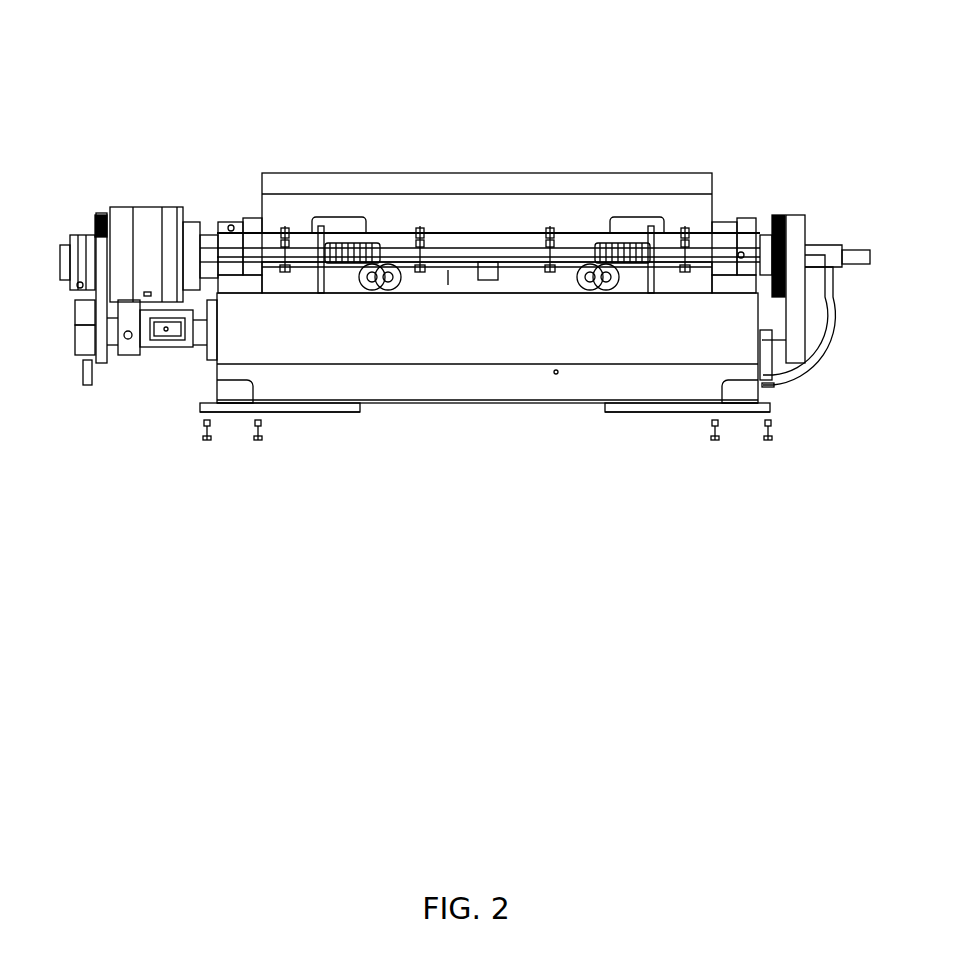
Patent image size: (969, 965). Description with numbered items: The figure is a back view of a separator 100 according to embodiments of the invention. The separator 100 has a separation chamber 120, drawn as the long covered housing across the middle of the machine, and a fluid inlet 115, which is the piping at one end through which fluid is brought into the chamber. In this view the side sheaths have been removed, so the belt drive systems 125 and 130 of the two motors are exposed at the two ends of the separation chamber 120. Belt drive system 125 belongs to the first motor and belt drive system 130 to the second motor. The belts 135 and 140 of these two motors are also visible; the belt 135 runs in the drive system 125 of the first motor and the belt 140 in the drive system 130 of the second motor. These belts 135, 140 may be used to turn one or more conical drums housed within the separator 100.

The separator 100 is at (153, 22).
The fluid inlet 115 is at (855, 265).
The separation chamber 120 is at (513, 181).
The belt drive system 125 is at (105, 193).
The belt drive system 130 is at (778, 195).
The belt 135 is at (106, 335).
The belt 140 is at (790, 228).